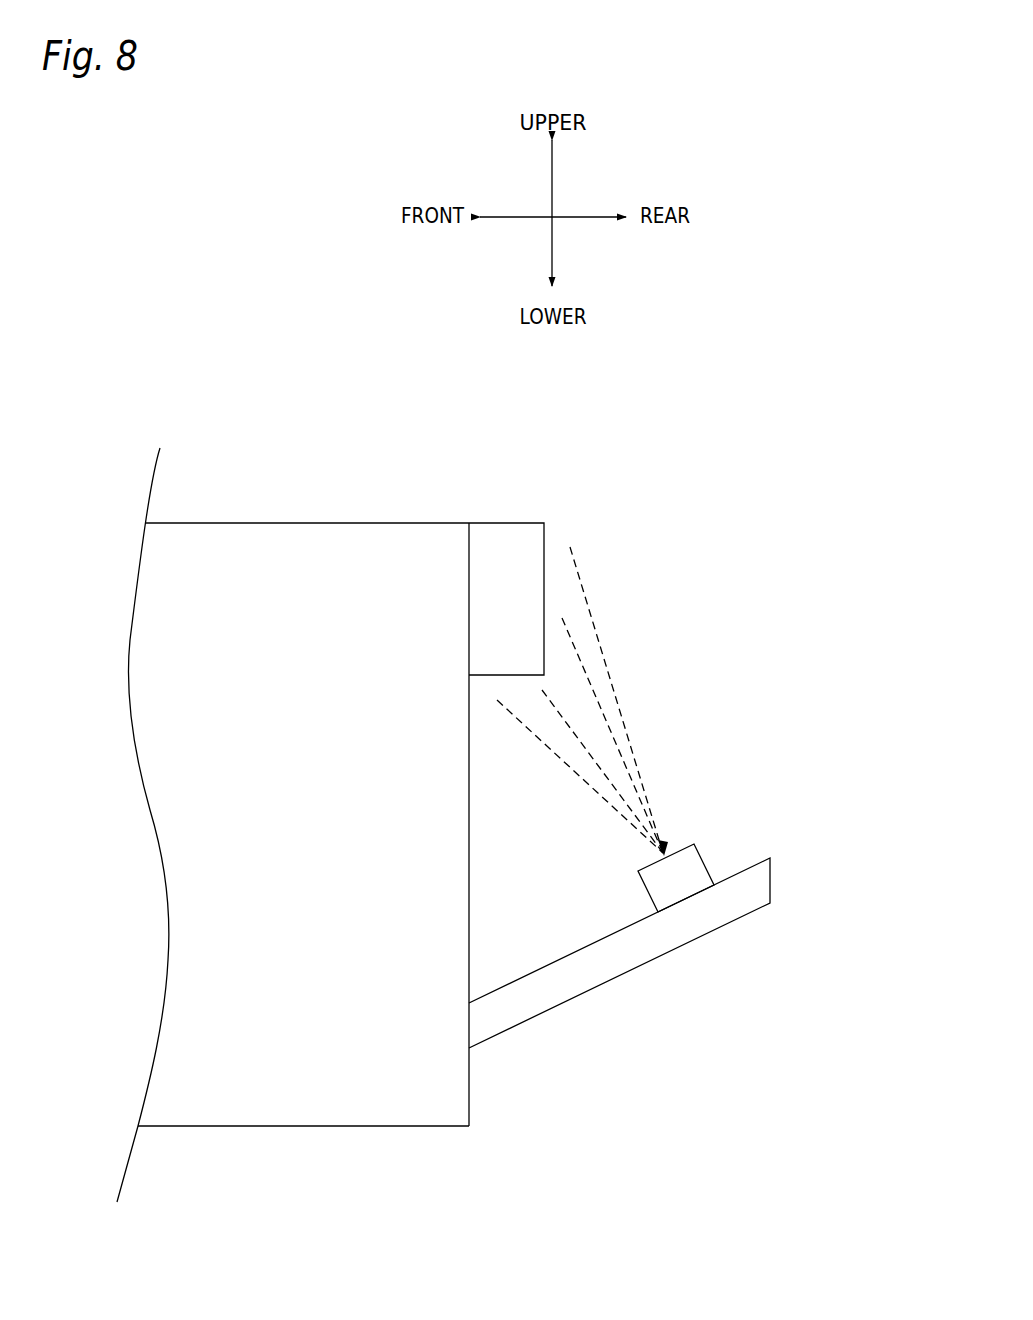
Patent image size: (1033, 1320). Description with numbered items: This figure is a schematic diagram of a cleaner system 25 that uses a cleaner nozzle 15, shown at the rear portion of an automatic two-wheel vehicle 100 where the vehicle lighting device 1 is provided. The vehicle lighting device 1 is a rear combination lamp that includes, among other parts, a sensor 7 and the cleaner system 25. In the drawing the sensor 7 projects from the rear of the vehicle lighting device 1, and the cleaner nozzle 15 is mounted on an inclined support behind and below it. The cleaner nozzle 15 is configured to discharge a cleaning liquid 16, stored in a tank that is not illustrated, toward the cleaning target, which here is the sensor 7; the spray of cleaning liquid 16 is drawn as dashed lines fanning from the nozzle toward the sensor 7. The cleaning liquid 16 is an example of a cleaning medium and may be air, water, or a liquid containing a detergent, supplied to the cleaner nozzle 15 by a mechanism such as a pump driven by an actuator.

The automatic two-wheel vehicle 100 is at (299, 347).
The vehicle lighting device 1 is at (408, 480).
The sensor 7 is at (537, 540).
The cleaning liquid 16 is at (627, 727).
The cleaner nozzle 15 is at (651, 881).
The cleaner system 25 is at (766, 798).